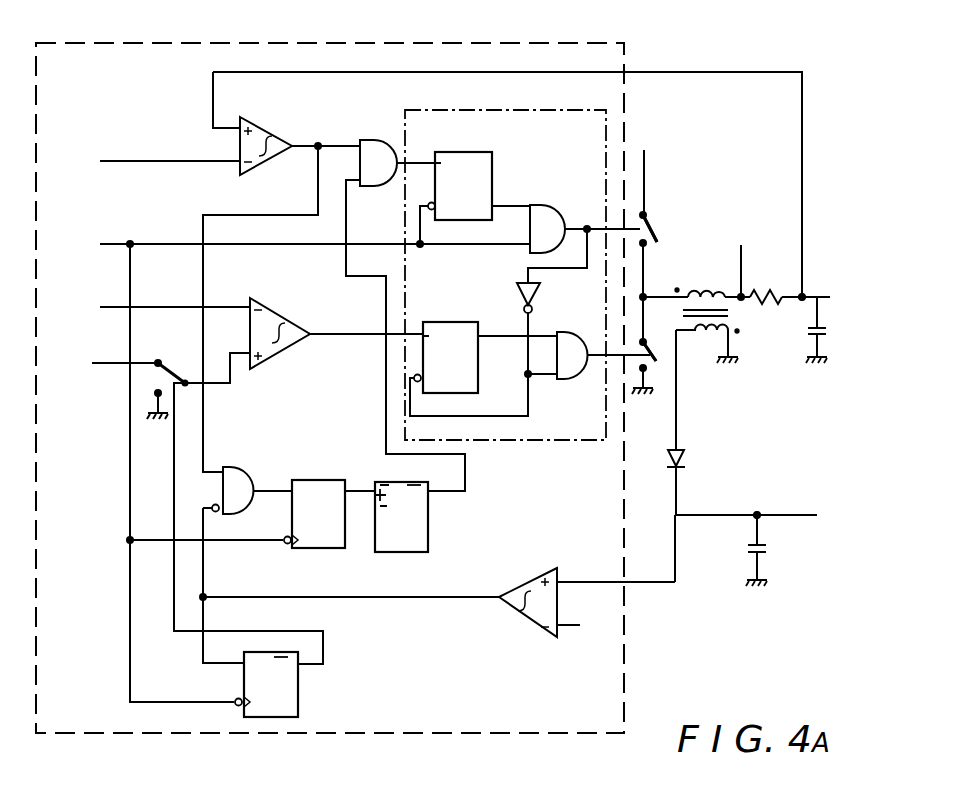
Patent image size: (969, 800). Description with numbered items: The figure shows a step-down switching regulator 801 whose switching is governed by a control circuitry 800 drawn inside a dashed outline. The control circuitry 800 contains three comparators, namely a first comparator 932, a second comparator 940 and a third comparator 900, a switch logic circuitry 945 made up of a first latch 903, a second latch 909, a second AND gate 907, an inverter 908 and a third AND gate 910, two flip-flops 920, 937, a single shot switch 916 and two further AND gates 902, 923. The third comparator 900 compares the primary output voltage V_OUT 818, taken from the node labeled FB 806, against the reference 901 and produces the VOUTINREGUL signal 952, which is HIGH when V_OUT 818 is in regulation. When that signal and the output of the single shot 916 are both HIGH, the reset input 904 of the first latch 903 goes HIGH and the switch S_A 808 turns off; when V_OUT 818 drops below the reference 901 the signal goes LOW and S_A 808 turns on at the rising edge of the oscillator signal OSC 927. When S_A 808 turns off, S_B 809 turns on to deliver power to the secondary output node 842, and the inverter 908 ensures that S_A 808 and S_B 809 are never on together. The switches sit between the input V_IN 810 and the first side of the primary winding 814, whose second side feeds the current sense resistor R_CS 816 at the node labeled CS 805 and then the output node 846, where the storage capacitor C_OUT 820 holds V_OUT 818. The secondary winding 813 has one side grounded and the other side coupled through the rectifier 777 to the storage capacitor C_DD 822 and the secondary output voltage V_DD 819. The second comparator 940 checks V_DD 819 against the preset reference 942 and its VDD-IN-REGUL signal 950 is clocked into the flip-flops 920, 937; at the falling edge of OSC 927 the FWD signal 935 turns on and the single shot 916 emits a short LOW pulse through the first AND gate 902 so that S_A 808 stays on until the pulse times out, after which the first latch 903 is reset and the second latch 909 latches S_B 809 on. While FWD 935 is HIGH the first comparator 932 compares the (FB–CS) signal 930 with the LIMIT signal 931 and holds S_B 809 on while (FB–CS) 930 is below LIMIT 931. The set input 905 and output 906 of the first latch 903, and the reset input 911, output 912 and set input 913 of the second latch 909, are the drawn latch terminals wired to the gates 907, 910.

The control circuitry 800 is at (497, 42).
The step-down switching regulator 801 is at (474, 394).
The current sense node CS 805 is at (754, 262).
The feedback node FB 806 is at (833, 184).
The switch S_A 808 is at (658, 240).
The switch S_B 809 is at (653, 367).
The input voltage VIN 810 is at (670, 171).
The secondary winding 813 is at (708, 345).
The primary winding 814 is at (702, 294).
The inductor current sense resistor R_CS 816 is at (766, 306).
The primary output voltage V_OUT 818 is at (844, 296).
The secondary output voltage V_DD 819 is at (821, 514).
The storage device C_OUT 820 is at (846, 330).
The storage device C_DD 822 is at (792, 550).
The secondary output node 842 is at (759, 513).
The output node 846 is at (803, 296).
The rectifier 777 is at (686, 462).
The comparator C3 900 is at (282, 136).
The reference REF1 901 is at (100, 161).
The AND gate G1 902 is at (374, 140).
The latch SR1 903 is at (492, 165).
The reset R of SR1 904 is at (444, 153).
The set input S 905 is at (434, 212).
The output Q 906 is at (492, 202).
The gate G2 907 is at (560, 214).
The inverter G3 908 is at (515, 290).
The latch SR2 909 is at (477, 325).
The gate G4 910 is at (566, 379).
The reset input R of SR2 911 is at (424, 325).
The output Q of SR2 912 is at (478, 341).
The set input S of SR2 913 is at (426, 393).
The single shot switch SS1 916 is at (414, 552).
The flip-flop D1 920 is at (306, 550).
The AND gate G5 923 is at (243, 453).
The OSC signal 927 is at (105, 242).
The (FB–CS) voltage signal 930 is at (100, 307).
The LIMIT signal 931 is at (96, 363).
The comparator C1 932 is at (266, 298).
The FWD signal 935 is at (323, 632).
The flip-flop D2 937 is at (298, 702).
The comparator C2 940 is at (544, 568).
The preset reference level REF2 942 is at (575, 630).
The switch logic circuitry 945 is at (535, 440).
The VDD-IN-REGUL signal 950 is at (443, 599).
The VOUTINREGUL signal 952 is at (210, 216).